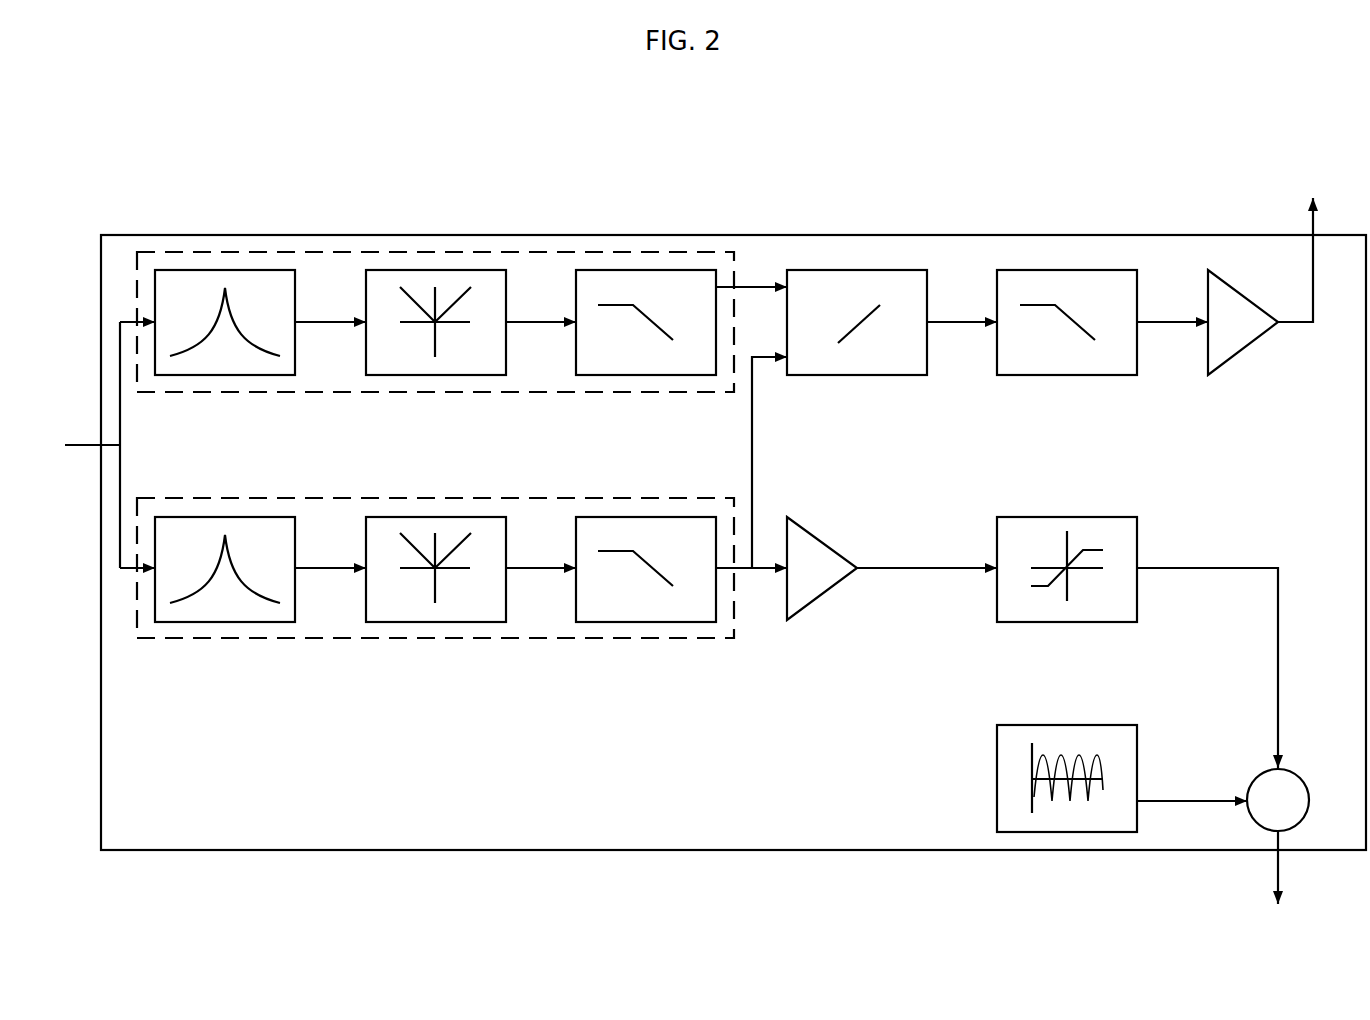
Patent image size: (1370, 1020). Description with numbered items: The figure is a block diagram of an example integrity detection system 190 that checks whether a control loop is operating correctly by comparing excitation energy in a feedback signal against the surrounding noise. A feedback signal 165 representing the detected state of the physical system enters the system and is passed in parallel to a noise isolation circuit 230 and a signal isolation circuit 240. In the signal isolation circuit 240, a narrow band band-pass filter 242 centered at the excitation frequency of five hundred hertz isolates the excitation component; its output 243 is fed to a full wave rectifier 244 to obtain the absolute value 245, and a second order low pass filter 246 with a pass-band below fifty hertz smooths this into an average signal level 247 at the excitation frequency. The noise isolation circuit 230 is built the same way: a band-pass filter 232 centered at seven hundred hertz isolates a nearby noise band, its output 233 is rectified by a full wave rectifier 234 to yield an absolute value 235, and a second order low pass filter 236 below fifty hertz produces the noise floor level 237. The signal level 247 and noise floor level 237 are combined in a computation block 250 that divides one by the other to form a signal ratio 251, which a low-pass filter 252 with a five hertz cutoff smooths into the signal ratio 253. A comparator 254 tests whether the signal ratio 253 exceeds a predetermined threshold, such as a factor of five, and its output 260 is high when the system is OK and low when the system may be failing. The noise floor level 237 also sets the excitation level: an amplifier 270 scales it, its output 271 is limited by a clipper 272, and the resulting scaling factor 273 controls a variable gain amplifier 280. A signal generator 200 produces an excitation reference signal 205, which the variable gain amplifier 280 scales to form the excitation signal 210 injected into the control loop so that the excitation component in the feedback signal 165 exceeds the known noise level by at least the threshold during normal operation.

The integrity detection system 190 is at (858, 161).
The feedback signal 165 is at (108, 445).
The signal isolation circuit 240 is at (295, 252).
The band-pass filter 242 is at (188, 270).
The output 243 is at (320, 322).
The full wave rectifier 244 is at (400, 270).
The absolute value 245 is at (527, 322).
The second order low pass filter 246 is at (610, 270).
The average signal level 247 is at (755, 285).
The noise isolation circuit 230 is at (328, 638).
The band-pass filter 232 is at (188, 517).
The output 233 is at (312, 568).
The full wave rectifier 234 is at (400, 517).
The absolute value 235 is at (523, 568).
The second order low pass filter 236 is at (610, 517).
The noise floor level 237 is at (760, 565).
The computation block 250 is at (848, 270).
The signal ratio 251 is at (948, 322).
The low-pass filter 252 is at (1007, 270).
The signal ratio 253 is at (1182, 322).
The comparator 254 is at (1229, 362).
The output 260 is at (1333, 190).
The amplifier 270 is at (838, 552).
The output 271 is at (948, 568).
The clipper 272 is at (1030, 517).
The scaling factor 273 is at (1159, 568).
The signal generator 200 is at (1031, 725).
The excitation reference signal 205 is at (1155, 801).
The variable gain amplifier 280 is at (1291, 766).
The excitation signal 210 is at (1278, 868).